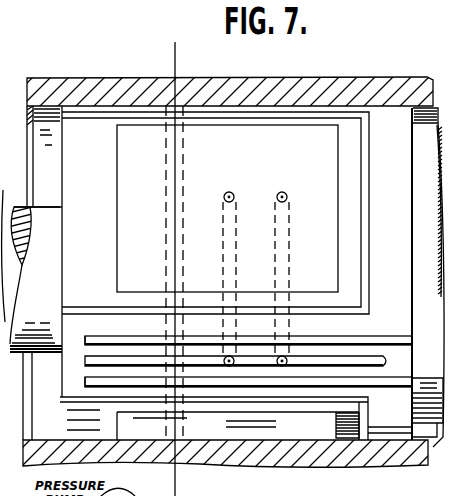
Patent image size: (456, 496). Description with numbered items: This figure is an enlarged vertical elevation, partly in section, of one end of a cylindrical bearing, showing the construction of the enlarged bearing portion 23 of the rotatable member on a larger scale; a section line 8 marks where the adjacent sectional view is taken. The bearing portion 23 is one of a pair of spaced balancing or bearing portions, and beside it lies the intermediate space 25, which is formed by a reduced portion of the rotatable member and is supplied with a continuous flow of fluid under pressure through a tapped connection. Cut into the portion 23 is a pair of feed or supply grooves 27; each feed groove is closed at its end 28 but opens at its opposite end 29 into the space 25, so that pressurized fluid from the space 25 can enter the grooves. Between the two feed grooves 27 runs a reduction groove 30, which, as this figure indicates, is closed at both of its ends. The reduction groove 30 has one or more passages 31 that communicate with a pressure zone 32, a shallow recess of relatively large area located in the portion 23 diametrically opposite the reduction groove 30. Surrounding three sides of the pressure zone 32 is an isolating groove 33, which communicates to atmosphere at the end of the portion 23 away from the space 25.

The section line 8- 8 is at (192, 48).
The bearing portion 23 is at (389, 130).
The intermediate space 25 is at (424, 438).
The feed grooves 27 is at (369, 340).
The closed ends 28 is at (86, 341).
The open ends 29 is at (412, 342).
The reduction groove 30 is at (346, 357).
The passages 31 is at (289, 274).
The pressure zone 32 is at (322, 176).
The isolating groove 33 is at (368, 193).